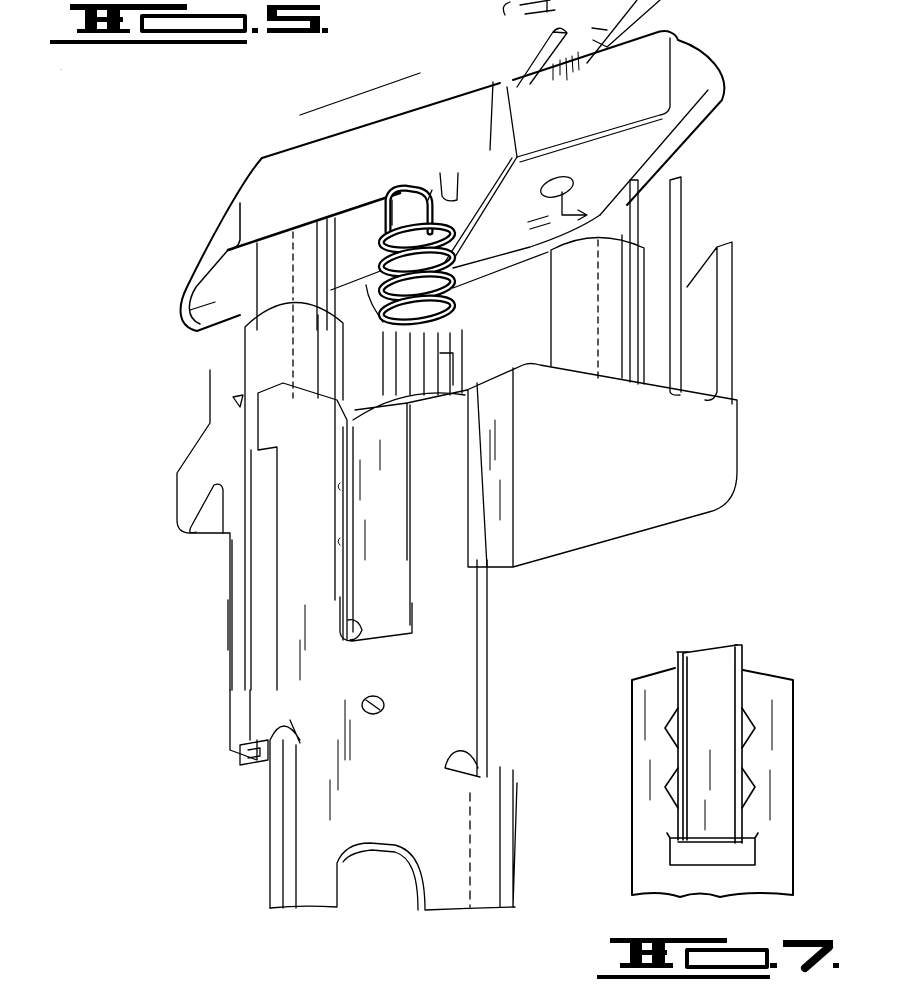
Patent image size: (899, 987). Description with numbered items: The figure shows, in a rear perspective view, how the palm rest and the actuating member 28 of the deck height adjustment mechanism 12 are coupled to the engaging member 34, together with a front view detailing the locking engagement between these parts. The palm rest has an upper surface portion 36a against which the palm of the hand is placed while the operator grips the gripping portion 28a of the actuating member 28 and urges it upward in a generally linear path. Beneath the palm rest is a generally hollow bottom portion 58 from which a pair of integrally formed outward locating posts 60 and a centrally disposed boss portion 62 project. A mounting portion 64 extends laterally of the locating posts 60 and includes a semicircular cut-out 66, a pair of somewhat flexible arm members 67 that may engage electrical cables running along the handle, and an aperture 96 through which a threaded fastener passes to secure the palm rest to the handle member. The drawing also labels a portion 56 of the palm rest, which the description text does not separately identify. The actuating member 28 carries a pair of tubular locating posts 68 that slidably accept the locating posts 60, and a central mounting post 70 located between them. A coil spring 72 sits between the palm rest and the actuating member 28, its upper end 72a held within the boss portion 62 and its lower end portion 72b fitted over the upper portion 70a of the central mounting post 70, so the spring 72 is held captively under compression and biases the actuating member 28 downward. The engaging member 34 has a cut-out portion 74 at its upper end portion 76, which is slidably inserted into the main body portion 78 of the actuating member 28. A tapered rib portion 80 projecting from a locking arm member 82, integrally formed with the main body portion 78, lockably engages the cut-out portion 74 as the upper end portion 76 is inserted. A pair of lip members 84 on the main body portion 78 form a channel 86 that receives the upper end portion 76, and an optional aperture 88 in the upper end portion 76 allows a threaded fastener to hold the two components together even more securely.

In FIG. 5, the deck height adjustment mechanism 12 is at (95, 216).
In FIG. 5, the actuating member 28 is at (210, 649).
In FIG. 5, the gripping portion 28a is at (200, 525).
In FIG. 5, the engaging member 34 is at (310, 830).
In FIG. 7, the engaging member 34 is at (640, 688).
In FIG. 5, the upper surface portion 36a is at (345, 132).
In FIG. 5, the cap 56 is at (233, 181).
In FIG. 5, the hollow bottom portion 58 is at (190, 320).
In FIG. 5, the locating posts 60 is at (272, 280).
In FIG. 5, the boss portion 62 is at (395, 210).
In FIG. 5, the mounting portion 64 is at (648, 70).
In FIG. 5, the semicircular cut-out 66 is at (457, 173).
In FIG. 5, the arm members 67 is at (530, 72).
In FIG. 5, the tubular locating posts 68 is at (265, 355).
In FIG. 5, the central mounting post 70 is at (455, 368).
In FIG. 5, the upper portion 70a is at (415, 398).
In FIG. 5, the coil spring 72 is at (462, 292).
In FIG. 5, the upper end 72a is at (402, 205).
In FIG. 5, the lower end portion 72b is at (385, 318).
In FIG. 5, the cut-out portion 74 is at (357, 640).
In FIG. 7, the cut-out portion 74 is at (708, 862).
In FIG. 5, the upper end portion 76 is at (278, 421).
In FIG. 5, the main body portion 78 is at (228, 600).
In FIG. 7, the tapered rib portion 80 is at (710, 660).
In FIG. 5, the locking arm member 82 is at (390, 605).
In FIG. 7, the locking arm member 82 is at (678, 660).
In FIG. 5, the lip members 84 is at (255, 710).
In FIG. 5, the channel 86 is at (255, 760).
In FIG. 5, the aperture 88 is at (384, 703).
In FIG. 5, the aperture 96 is at (570, 180).